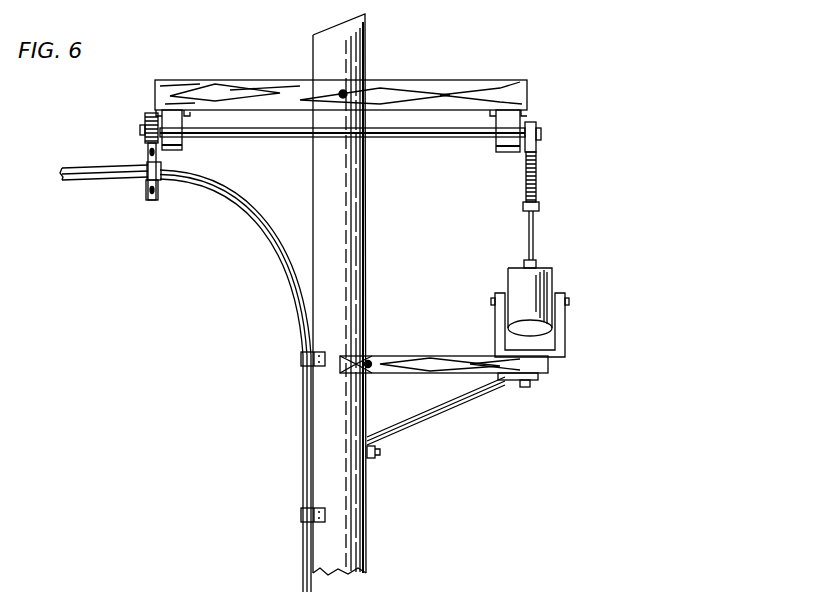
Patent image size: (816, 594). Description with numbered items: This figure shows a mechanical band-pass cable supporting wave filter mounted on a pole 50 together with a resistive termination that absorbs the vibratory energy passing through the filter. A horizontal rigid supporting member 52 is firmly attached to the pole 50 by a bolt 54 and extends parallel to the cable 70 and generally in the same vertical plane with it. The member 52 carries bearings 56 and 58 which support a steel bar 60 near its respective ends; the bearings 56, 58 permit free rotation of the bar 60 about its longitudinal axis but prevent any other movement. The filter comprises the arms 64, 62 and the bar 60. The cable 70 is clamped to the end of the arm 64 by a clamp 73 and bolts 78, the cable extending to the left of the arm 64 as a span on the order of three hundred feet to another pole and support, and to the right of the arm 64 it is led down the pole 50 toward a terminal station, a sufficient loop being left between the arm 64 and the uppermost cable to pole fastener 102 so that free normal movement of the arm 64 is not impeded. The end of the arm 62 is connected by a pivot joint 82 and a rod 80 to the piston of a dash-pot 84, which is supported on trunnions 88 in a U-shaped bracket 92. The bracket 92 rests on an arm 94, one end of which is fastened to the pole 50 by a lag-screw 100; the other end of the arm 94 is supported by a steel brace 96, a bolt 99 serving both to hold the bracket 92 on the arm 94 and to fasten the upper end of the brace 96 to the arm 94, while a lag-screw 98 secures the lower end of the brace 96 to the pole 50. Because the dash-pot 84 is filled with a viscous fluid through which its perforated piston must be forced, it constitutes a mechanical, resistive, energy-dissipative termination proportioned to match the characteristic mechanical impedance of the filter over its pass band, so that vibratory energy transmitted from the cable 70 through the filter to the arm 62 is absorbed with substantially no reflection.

The pole 50 is at (367, 230).
The horizontal rigid supporting member 52 is at (466, 80).
The bolt 54 is at (347, 92).
The bearing 56 is at (184, 150).
The bearing 58 is at (500, 155).
The steel bar 60 is at (262, 140).
The arm 62 is at (538, 180).
The arm 64 is at (146, 157).
The cable 70 is at (93, 181).
The clamp 73 is at (162, 172).
The bolts 78 is at (151, 201).
The rod 80 is at (527, 238).
The pivot joint 82 is at (540, 207).
The dash-pot 84 is at (553, 284).
The trunnions 88 is at (493, 298).
The U-shaped bracket 92 is at (495, 305).
The arm 94 is at (447, 356).
The steel brace 96 is at (455, 405).
The lag-screw 98 is at (381, 452).
The bolt 99 is at (525, 388).
The lag-screw 100 is at (372, 362).
The cable to pole fastener 102 is at (300, 359).